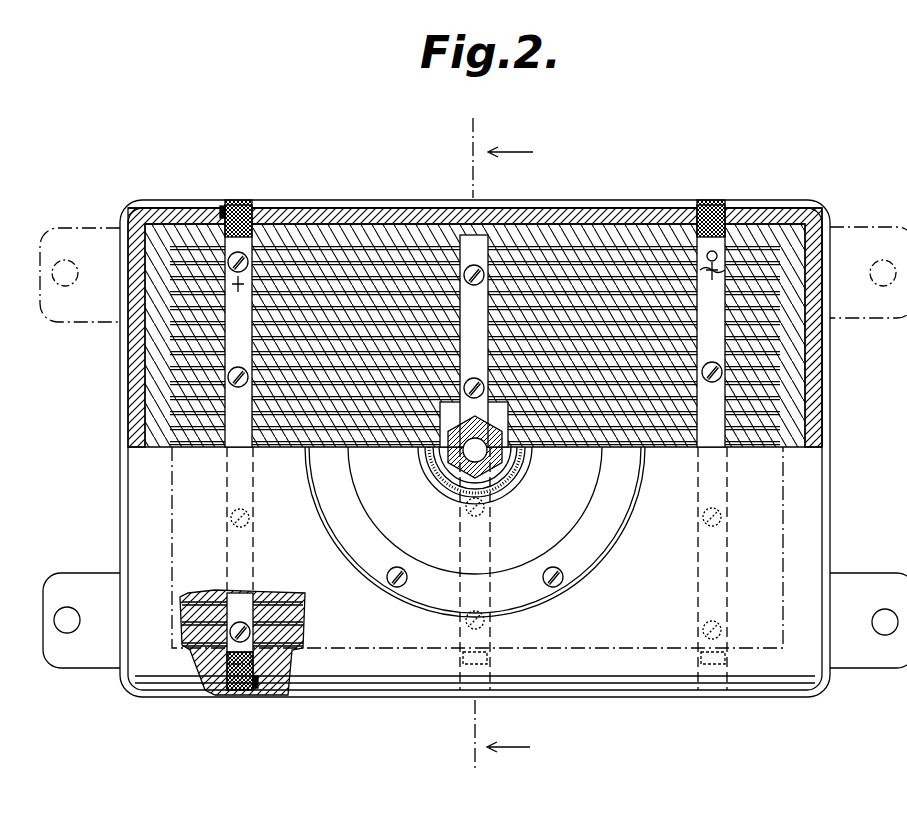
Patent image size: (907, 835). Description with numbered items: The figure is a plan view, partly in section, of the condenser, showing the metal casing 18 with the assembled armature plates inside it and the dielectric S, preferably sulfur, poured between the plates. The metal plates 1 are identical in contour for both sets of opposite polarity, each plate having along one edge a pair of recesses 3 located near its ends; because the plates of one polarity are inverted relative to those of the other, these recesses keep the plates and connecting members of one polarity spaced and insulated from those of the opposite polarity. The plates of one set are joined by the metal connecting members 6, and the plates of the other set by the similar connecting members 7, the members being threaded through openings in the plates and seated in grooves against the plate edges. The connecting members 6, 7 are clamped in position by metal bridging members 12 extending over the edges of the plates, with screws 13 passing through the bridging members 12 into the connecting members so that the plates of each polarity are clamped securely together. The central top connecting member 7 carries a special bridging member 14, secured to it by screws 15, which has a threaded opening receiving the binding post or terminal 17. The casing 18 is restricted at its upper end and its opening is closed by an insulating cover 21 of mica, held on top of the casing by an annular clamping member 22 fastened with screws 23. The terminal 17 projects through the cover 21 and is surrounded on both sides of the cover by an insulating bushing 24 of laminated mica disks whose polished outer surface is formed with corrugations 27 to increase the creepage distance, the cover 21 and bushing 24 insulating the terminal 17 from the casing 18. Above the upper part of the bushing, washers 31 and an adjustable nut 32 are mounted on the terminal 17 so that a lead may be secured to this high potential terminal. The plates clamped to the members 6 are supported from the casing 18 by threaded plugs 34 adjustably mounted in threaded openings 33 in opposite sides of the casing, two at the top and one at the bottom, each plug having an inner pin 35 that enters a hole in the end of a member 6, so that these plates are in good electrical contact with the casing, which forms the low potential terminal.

The metal plate 1 is at (325, 256).
The recess 3 is at (503, 449).
The connecting member 6 is at (284, 232).
The connecting member 7 is at (500, 226).
The bridging member 12 is at (730, 266).
The screw 13 is at (712, 282).
The bridging member 14 is at (475, 329).
The screw 15 is at (474, 424).
The terminal 17 is at (460, 456).
The casing 18 is at (131, 408).
The insulating cover 21 is at (516, 546).
The annular clamping member 22 is at (306, 464).
The screw 23 is at (390, 571).
The bushing 24 is at (524, 463).
The corrugations 27 is at (517, 490).
The washer 31 is at (522, 477).
The nut 32 is at (470, 466).
The threaded opening 33 is at (254, 194).
The threaded plug 34 is at (226, 210).
The pin 35 is at (697, 206).
The dielectric S is at (412, 236).